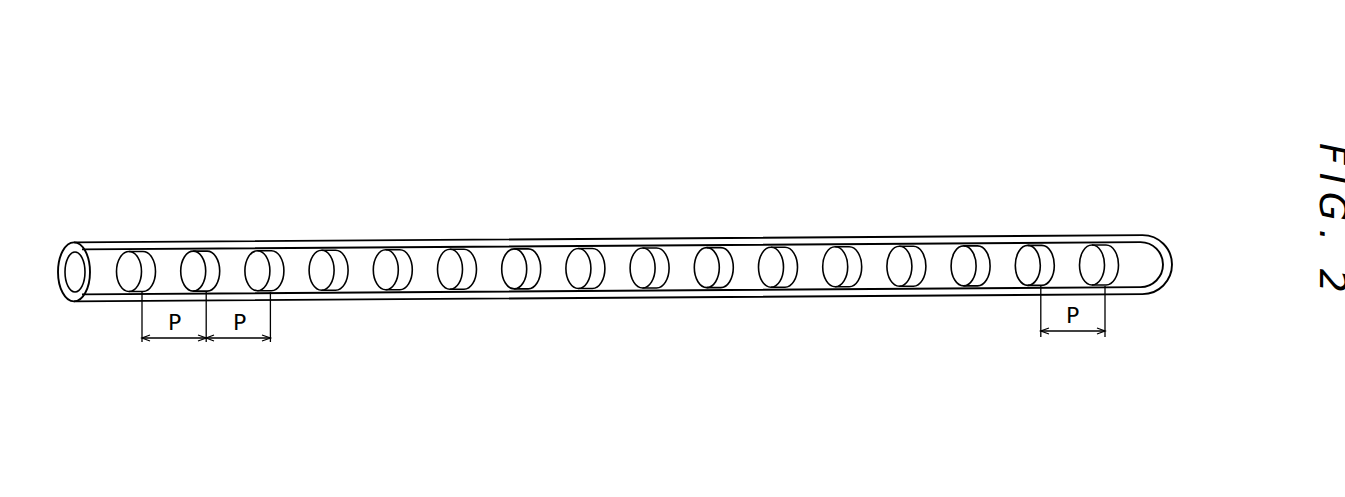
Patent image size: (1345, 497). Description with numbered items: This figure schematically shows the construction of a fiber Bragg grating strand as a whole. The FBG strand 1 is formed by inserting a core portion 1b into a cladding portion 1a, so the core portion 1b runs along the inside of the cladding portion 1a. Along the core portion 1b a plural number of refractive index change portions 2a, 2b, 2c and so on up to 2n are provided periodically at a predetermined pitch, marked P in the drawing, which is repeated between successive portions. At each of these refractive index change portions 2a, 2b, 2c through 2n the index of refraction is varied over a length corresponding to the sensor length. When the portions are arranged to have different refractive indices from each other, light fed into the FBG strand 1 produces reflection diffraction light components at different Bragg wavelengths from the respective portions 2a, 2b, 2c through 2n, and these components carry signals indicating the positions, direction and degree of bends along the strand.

The FBG strand 1 is at (688, 212).
The cladding portion 1a is at (63, 242).
The core portion 1b is at (73, 284).
The refractive index change portion 2a is at (140, 253).
The refractive index change portion 2b is at (203, 253).
The refractive index change portion 2c is at (270, 253).
The refractive index change portion 2n is at (1103, 250).